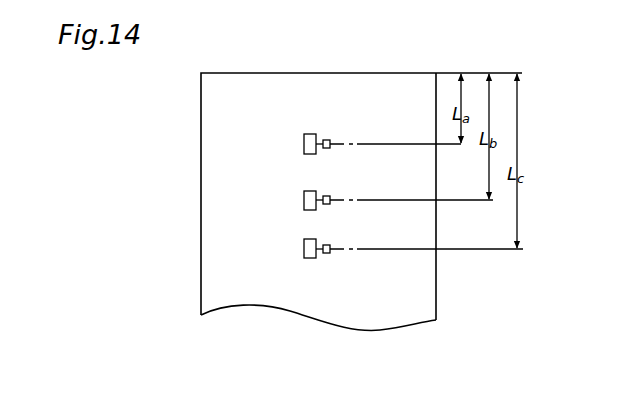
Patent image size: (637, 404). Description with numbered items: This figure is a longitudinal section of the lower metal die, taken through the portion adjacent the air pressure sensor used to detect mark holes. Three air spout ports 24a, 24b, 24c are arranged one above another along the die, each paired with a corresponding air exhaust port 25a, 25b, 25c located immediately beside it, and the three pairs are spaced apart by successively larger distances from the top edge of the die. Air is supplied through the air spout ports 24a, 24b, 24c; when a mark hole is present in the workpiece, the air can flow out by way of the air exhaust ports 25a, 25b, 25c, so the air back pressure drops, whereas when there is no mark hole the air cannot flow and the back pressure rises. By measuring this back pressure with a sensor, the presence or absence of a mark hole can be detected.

The air spout port 24a is at (328, 139).
The air spout port 24b is at (323, 205).
The air spout port 24c is at (325, 254).
The air exhaust port 25a is at (310, 133).
The air exhaust port 25b is at (304, 195).
The air exhaust port 25c is at (305, 259).